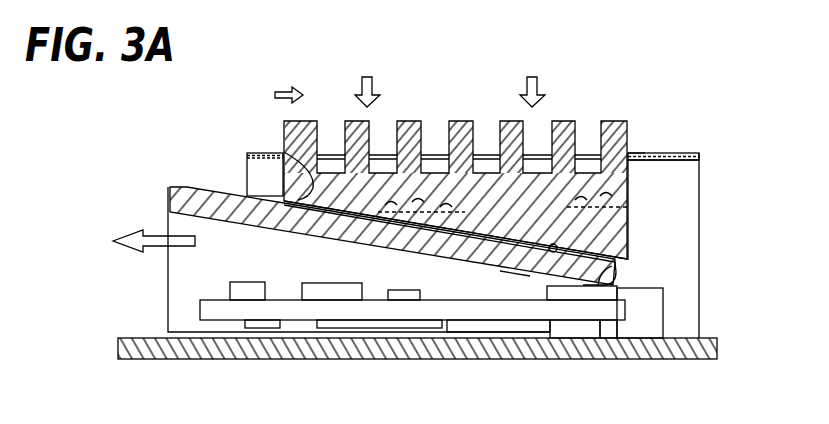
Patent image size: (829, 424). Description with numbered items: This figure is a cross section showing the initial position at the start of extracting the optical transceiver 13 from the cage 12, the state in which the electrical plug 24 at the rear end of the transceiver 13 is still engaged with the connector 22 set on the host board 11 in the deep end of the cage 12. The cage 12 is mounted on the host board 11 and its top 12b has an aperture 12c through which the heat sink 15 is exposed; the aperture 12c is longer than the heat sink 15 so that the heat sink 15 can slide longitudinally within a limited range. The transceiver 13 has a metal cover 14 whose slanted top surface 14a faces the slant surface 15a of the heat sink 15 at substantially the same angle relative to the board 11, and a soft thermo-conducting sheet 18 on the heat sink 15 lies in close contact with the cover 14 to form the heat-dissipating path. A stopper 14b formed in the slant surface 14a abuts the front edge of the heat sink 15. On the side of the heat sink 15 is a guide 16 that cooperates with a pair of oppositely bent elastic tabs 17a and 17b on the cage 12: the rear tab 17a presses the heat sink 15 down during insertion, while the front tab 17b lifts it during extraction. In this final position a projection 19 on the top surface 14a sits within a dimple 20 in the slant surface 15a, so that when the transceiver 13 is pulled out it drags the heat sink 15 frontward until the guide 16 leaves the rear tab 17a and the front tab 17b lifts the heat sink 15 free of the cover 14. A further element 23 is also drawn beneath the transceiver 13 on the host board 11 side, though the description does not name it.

The host board 11 is at (667, 352).
The cage 12 is at (702, 207).
The top of the cage 12b is at (698, 153).
The aperture 12c is at (630, 153).
The optical transceiver 13 is at (143, 300).
The cover 14 is at (223, 188).
The top surface of the cover 14a is at (284, 152).
The stopper 14b is at (247, 172).
The heat sink 15 is at (627, 122).
The slant surface of the heat sink 15a is at (327, 241).
The guide 16 is at (592, 176).
The rear elastic tab 17a is at (630, 195).
The front elastic tab 17b is at (568, 205).
The thermo-conducting sheet 18 is at (616, 280).
The projection 19 is at (513, 273).
The dimple 20 is at (560, 251).
The connector 22 is at (665, 316).
The electronic component 23 is at (448, 318).
The electrical plug 24 is at (591, 340).